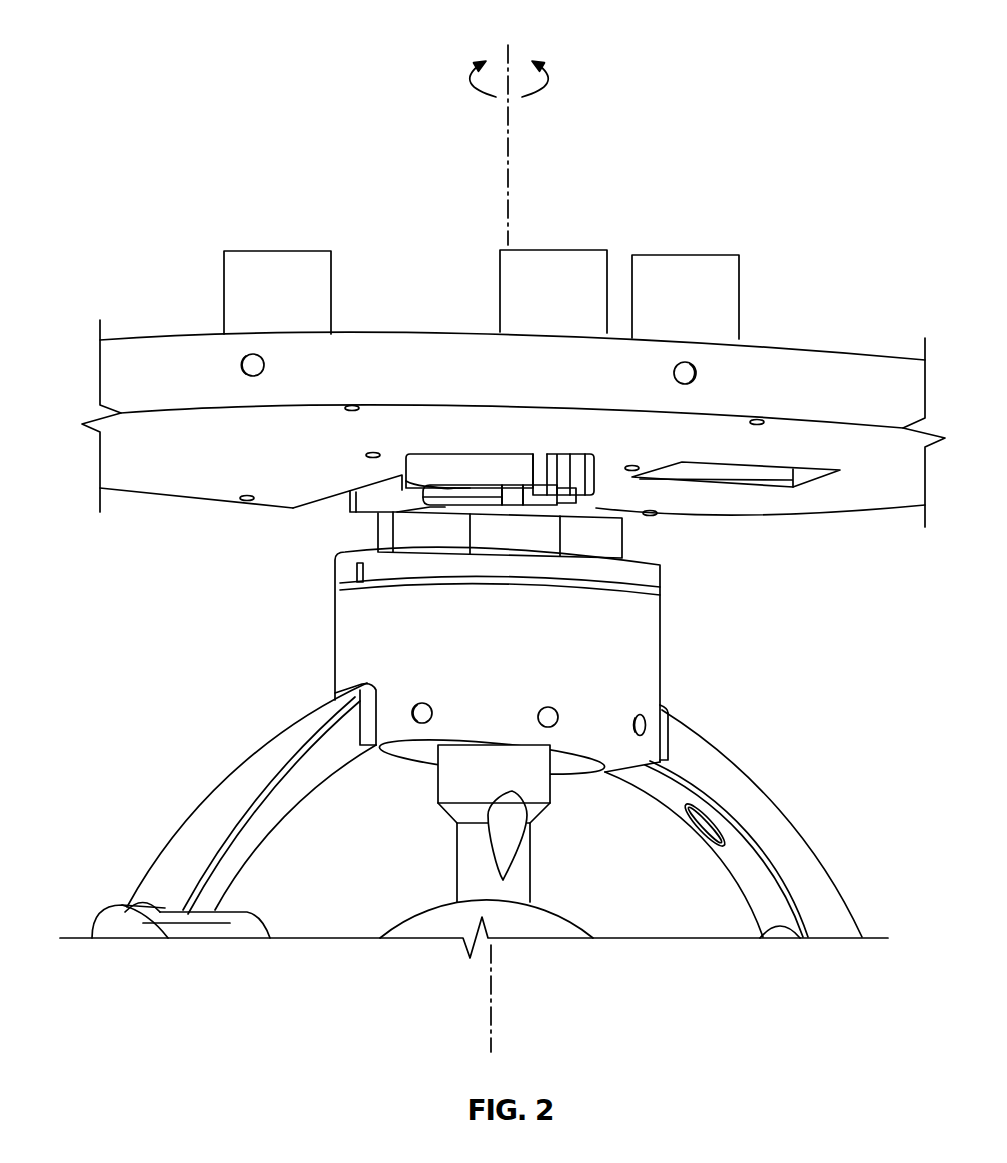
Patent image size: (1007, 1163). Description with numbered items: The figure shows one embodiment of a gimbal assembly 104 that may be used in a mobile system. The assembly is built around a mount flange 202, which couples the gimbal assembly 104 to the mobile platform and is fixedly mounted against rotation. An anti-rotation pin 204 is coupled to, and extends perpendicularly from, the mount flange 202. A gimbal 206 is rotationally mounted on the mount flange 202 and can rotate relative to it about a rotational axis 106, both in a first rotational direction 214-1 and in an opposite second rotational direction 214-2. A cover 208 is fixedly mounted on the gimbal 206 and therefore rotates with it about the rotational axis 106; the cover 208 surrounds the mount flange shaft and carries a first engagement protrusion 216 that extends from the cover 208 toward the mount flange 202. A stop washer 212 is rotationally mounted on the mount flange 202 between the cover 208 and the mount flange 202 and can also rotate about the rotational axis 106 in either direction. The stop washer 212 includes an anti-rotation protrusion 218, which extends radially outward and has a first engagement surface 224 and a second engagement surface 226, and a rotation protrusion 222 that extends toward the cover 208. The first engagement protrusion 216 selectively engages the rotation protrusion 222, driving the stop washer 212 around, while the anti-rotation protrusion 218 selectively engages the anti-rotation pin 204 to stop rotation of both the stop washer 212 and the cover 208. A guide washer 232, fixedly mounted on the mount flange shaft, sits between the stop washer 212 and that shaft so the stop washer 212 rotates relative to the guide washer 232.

The gimbal assembly 104 is at (130, 186).
The rotational axis 106 is at (510, 55).
The mount flange 202 is at (816, 348).
The anti-rotation pin 204 is at (585, 475).
The gimbal 206 is at (745, 764).
The cover 208 is at (407, 508).
The stop washer 212 is at (445, 467).
The first rotational direction 214-1 is at (470, 76).
The second rotational direction 214-2 is at (548, 76).
The first engagement protrusion 216 is at (516, 467).
The anti-rotation protrusion 218 is at (560, 465).
The rotation protrusion 222 is at (558, 505).
The first engagement surface 224 is at (530, 465).
The second engagement surface 226 is at (593, 460).
The guide washer 232 is at (388, 531).